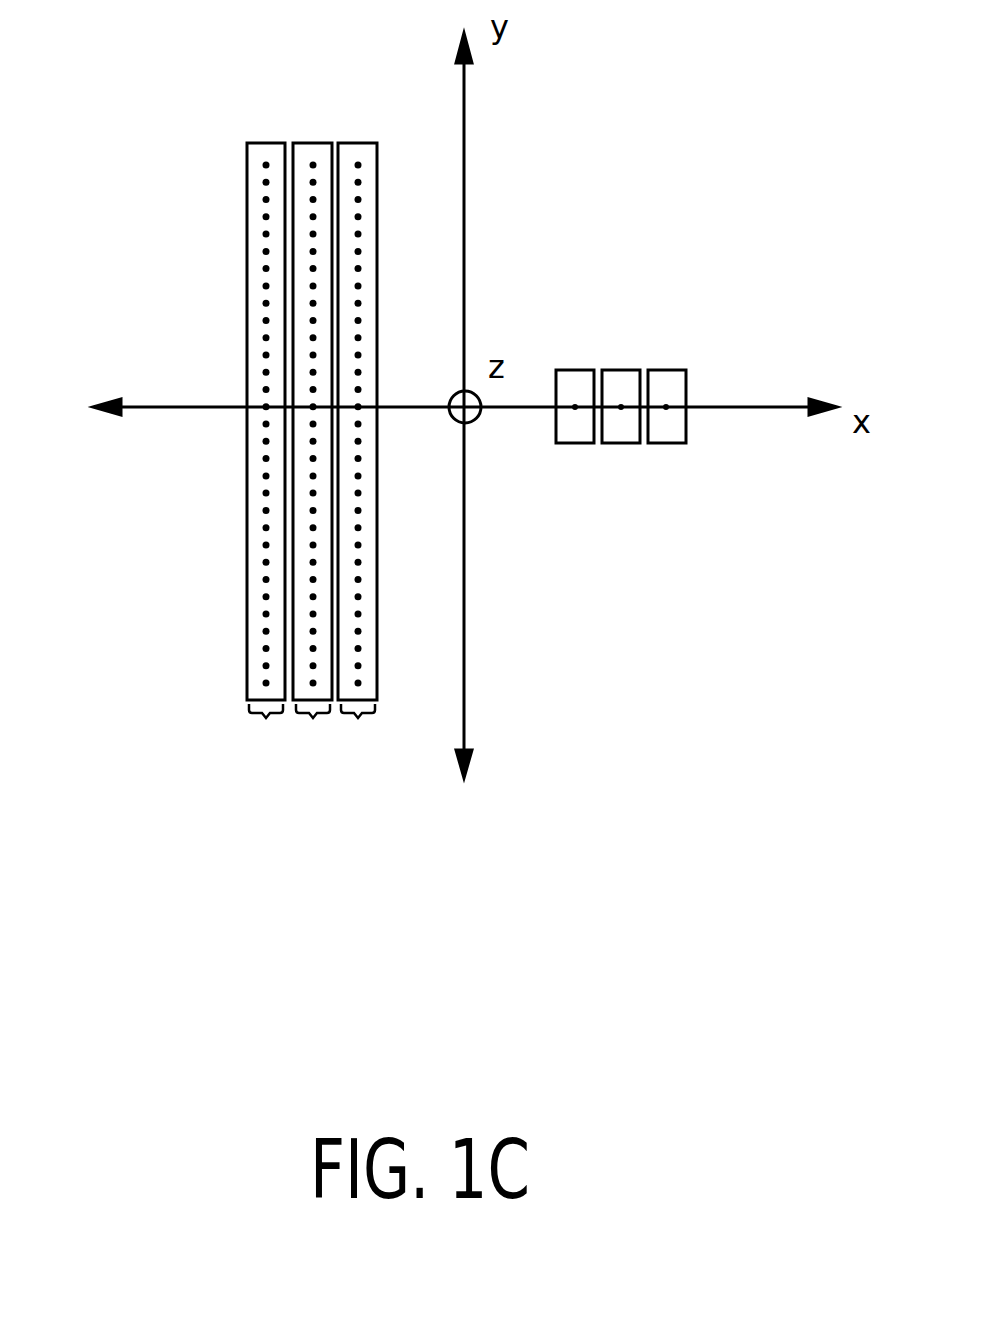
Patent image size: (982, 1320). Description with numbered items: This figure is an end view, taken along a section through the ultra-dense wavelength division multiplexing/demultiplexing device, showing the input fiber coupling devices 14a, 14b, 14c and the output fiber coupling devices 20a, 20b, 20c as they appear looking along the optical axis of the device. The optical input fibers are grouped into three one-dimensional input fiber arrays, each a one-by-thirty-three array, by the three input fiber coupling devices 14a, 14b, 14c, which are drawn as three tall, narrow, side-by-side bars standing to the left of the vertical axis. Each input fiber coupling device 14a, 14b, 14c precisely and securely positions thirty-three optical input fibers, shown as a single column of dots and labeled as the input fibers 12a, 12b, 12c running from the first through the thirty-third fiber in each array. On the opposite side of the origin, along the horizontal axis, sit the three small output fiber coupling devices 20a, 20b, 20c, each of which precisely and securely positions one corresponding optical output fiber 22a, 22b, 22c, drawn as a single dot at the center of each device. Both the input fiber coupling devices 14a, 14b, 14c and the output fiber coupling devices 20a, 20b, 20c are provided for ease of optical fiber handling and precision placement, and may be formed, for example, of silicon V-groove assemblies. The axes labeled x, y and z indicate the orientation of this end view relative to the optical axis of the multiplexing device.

The optical input fibers 12a is at (266, 718).
The optical input fibers 12b is at (313, 718).
The optical input fibers 12c is at (358, 718).
The input fiber coupling device 14a is at (262, 142).
The input fiber coupling device 14b is at (307, 142).
The input fiber coupling device 14c is at (357, 142).
The output fiber coupling device 20a is at (673, 378).
The output fiber coupling device 20b is at (618, 380).
The output fiber coupling device 20c is at (568, 380).
The optical output fiber 22a is at (665, 423).
The optical output fiber 22b is at (620, 423).
The optical output fiber 22c is at (575, 423).